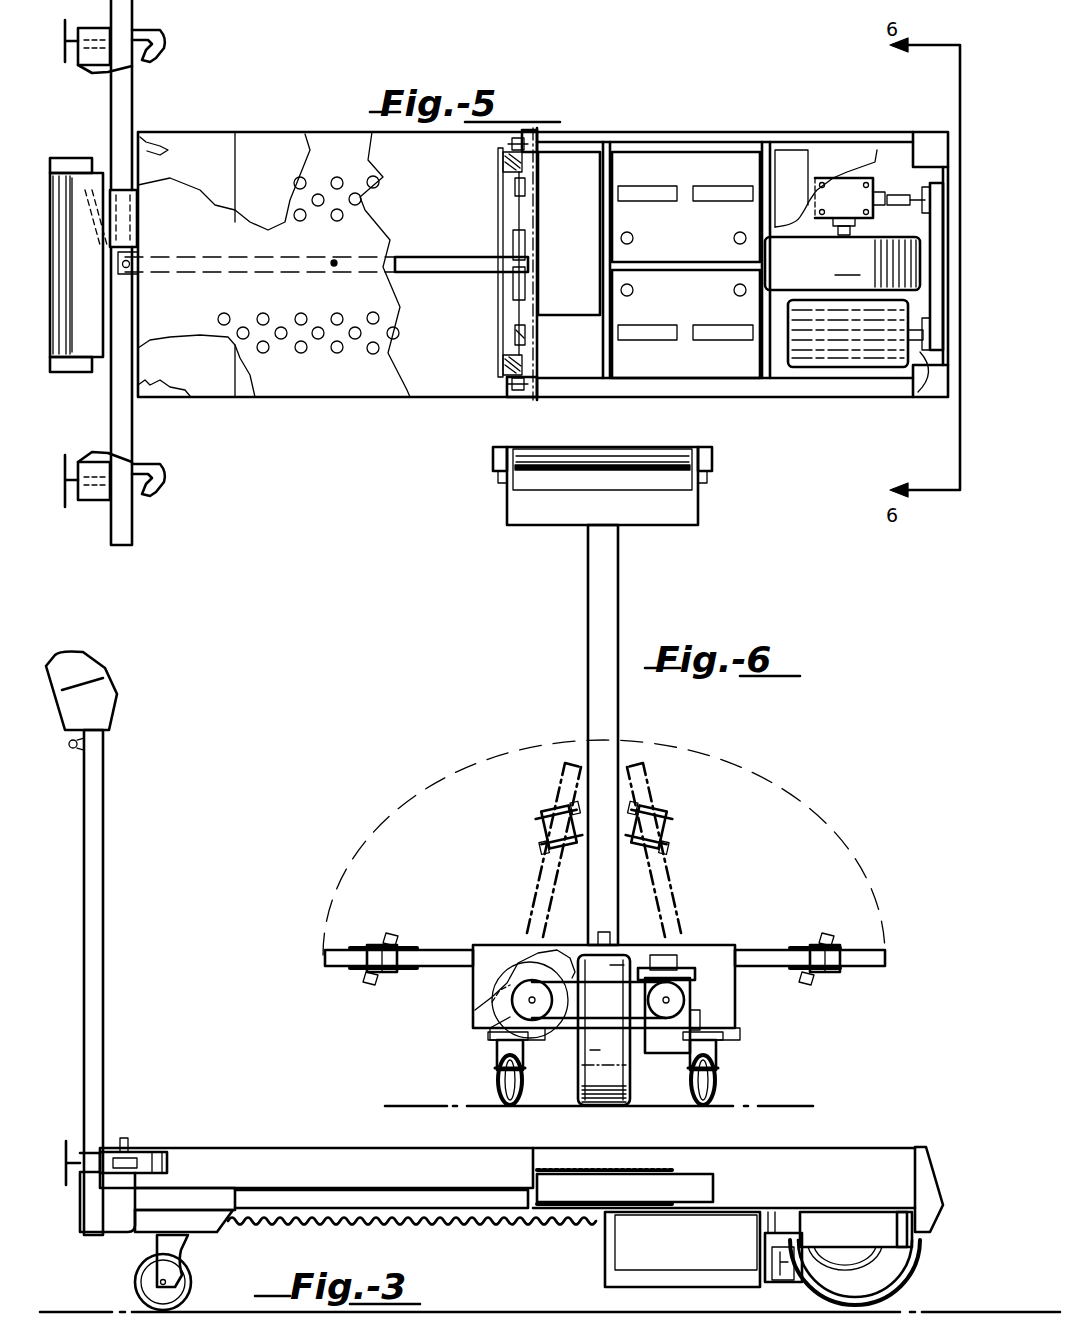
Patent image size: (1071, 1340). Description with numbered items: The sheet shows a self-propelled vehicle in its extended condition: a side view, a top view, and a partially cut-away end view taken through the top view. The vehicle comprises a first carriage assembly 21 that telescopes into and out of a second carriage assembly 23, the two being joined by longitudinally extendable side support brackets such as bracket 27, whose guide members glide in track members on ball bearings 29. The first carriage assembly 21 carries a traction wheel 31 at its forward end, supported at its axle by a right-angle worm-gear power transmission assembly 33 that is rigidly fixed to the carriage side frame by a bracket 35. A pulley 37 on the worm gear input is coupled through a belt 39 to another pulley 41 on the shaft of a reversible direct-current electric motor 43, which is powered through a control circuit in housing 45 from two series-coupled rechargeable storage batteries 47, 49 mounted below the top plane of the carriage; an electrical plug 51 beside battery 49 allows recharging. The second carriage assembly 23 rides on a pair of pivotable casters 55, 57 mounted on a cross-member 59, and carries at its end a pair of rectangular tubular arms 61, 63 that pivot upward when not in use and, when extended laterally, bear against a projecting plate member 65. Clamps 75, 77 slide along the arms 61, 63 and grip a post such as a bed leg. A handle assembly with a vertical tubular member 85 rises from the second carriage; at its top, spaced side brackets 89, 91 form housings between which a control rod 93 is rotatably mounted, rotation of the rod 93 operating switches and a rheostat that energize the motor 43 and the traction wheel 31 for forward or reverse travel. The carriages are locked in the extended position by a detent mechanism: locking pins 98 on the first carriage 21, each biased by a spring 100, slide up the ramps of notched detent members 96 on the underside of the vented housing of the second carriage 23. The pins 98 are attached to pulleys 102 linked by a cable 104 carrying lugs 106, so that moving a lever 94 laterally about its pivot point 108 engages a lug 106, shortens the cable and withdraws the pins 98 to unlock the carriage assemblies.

In FIG. 5, the first carriage assembly 21 is at (724, 130).
In FIG. 3, the first carriage assembly 21 is at (798, 1148).
In FIG. 5, the second carriage assembly 23 is at (336, 132).
In FIG. 3, the second carriage assembly 23 is at (258, 1146).
In FIG. 3, the side support bracket 27 is at (721, 1190).
In FIG. 3, the ball bearings 29 is at (598, 1170).
In FIG. 5, the traction wheel 31 is at (842, 263).
In FIG. 6, the traction wheel 31 is at (578, 1084).
In FIG. 3, the traction wheel 31 is at (885, 1276).
In FIG. 5, the power transmission assembly 33 is at (844, 206).
In FIG. 6, the power transmission assembly 33 is at (664, 1044).
In FIG. 6, the bracket 35 is at (680, 968).
In FIG. 5, the pulley 37 is at (925, 190).
In FIG. 6, the pulley 37 is at (678, 999).
In FIG. 5, the belt 39 is at (935, 227).
In FIG. 6, the belt 39 is at (571, 980).
In FIG. 5, the pulley 41 is at (930, 372).
In FIG. 6, the pulley 41 is at (531, 1005).
In FIG. 5, the electric motor 43 is at (825, 357).
In FIG. 6, the electric motor 43 is at (509, 1014).
In FIG. 3, the electric motor 43 is at (856, 1229).
In FIG. 5, the housing 45 is at (574, 260).
In FIG. 5, the storage battery 47 is at (686, 207).
In FIG. 5, the storage battery 49 is at (686, 324).
In FIG. 3, the storage battery 49 is at (682, 1249).
In FIG. 3, the electrical plug 51 is at (780, 1283).
In FIG. 6, the caster 55 is at (500, 1085).
In FIG. 3, the caster 55 is at (192, 1273).
In FIG. 6, the caster 57 is at (718, 1091).
In FIG. 6, the cross-member 59 is at (731, 1029).
In FIG. 3, the cross-member 59 is at (217, 1237).
In FIG. 5, the tubular arm 61 is at (128, 447).
In FIG. 6, the tubular arm 61 is at (566, 779).
In FIG. 5, the tubular arm 63 is at (128, 113).
In FIG. 6, the tubular arm 63 is at (648, 788).
In FIG. 3, the plate member 65 is at (112, 1233).
In FIG. 5, the clamp 75 is at (160, 488).
In FIG. 6, the clamp 75 is at (543, 828).
In FIG. 3, the clamp 75 is at (114, 1182).
In FIG. 5, the clamp 77 is at (154, 57).
In FIG. 6, the clamp 77 is at (662, 831).
In FIG. 6, the vertically extending rectangular tubular member 85 is at (590, 603).
In FIG. 3, the vertically extending rectangular tubular member 85 is at (99, 893).
In FIG. 5, the side bracket 89 is at (80, 374).
In FIG. 6, the side bracket 89 is at (507, 502).
In FIG. 3, the side bracket 89 is at (100, 692).
In FIG. 5, the side bracket 91 is at (77, 158).
In FIG. 6, the side bracket 91 is at (698, 500).
In FIG. 5, the rod or bar 93 is at (50, 190).
In FIG. 6, the rod or bar 93 is at (641, 453).
In FIG. 5, the lever 94 is at (134, 256).
In FIG. 3, the lever 94 is at (126, 1150).
In FIG. 5, the detent member 96 is at (162, 144).
In FIG. 5, the locking pin 98 is at (512, 143).
In FIG. 5, the spring 100 is at (505, 163).
In FIG. 5, the pulley 102 is at (515, 188).
In FIG. 5, the cable 104 is at (515, 332).
In FIG. 5, the lug 106 is at (548, 257).
In FIG. 5, the pivot point 108 is at (334, 262).